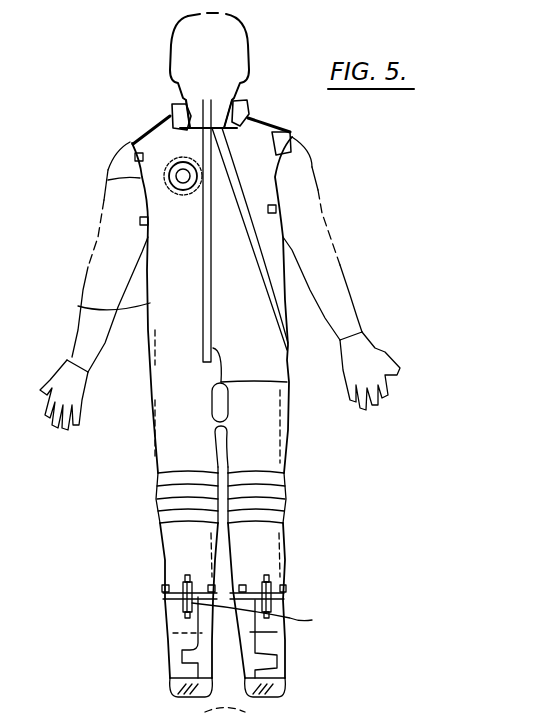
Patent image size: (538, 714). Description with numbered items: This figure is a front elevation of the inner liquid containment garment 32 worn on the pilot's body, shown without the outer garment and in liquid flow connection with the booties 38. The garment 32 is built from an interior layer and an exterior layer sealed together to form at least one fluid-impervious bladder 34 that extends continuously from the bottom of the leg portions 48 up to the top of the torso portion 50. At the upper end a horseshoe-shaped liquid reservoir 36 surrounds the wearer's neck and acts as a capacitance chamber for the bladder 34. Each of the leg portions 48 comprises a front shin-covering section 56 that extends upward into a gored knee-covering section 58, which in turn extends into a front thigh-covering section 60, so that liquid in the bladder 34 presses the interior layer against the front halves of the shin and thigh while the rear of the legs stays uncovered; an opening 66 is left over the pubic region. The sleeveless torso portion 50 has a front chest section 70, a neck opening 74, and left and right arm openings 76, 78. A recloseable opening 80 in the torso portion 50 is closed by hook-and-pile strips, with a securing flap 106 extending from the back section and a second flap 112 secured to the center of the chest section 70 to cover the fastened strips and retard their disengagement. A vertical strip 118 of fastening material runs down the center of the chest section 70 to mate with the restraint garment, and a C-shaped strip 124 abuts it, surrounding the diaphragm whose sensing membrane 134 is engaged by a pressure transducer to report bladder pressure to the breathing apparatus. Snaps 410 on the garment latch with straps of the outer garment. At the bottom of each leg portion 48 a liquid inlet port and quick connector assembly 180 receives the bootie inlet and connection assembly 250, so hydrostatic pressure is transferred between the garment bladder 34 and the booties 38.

The inner liquid containment garment 32 is at (133, 396).
The bladder 34 is at (133, 136).
The liquid reservoir 36 is at (172, 103).
The booties 38 is at (160, 634).
The leg portions 48 is at (165, 538).
The torso portion 50 is at (78, 306).
The front shin-covering sections 56 is at (183, 553).
The gored knee-covering sections 58 is at (160, 500).
The front thigh-covering sections 60 is at (165, 460).
The opening 66 is at (222, 402).
The chest section 70 is at (187, 242).
The neck opening 74 is at (220, 124).
The left arm opening 76 is at (277, 187).
The right arm opening 78 is at (108, 180).
The recloseable opening 80 is at (259, 170).
The securing flap 106 is at (272, 283).
The flap 112 is at (283, 372).
The strip of fastening material 118 is at (187, 330).
The C-shaped strip of fastening material 124 is at (183, 190).
The sensing membrane 134 is at (175, 148).
The liquid inlet port and quick connector assembly 180 is at (170, 580).
The bootie inlet and connection assembly 250 is at (287, 612).
The snaps 410 is at (135, 158).